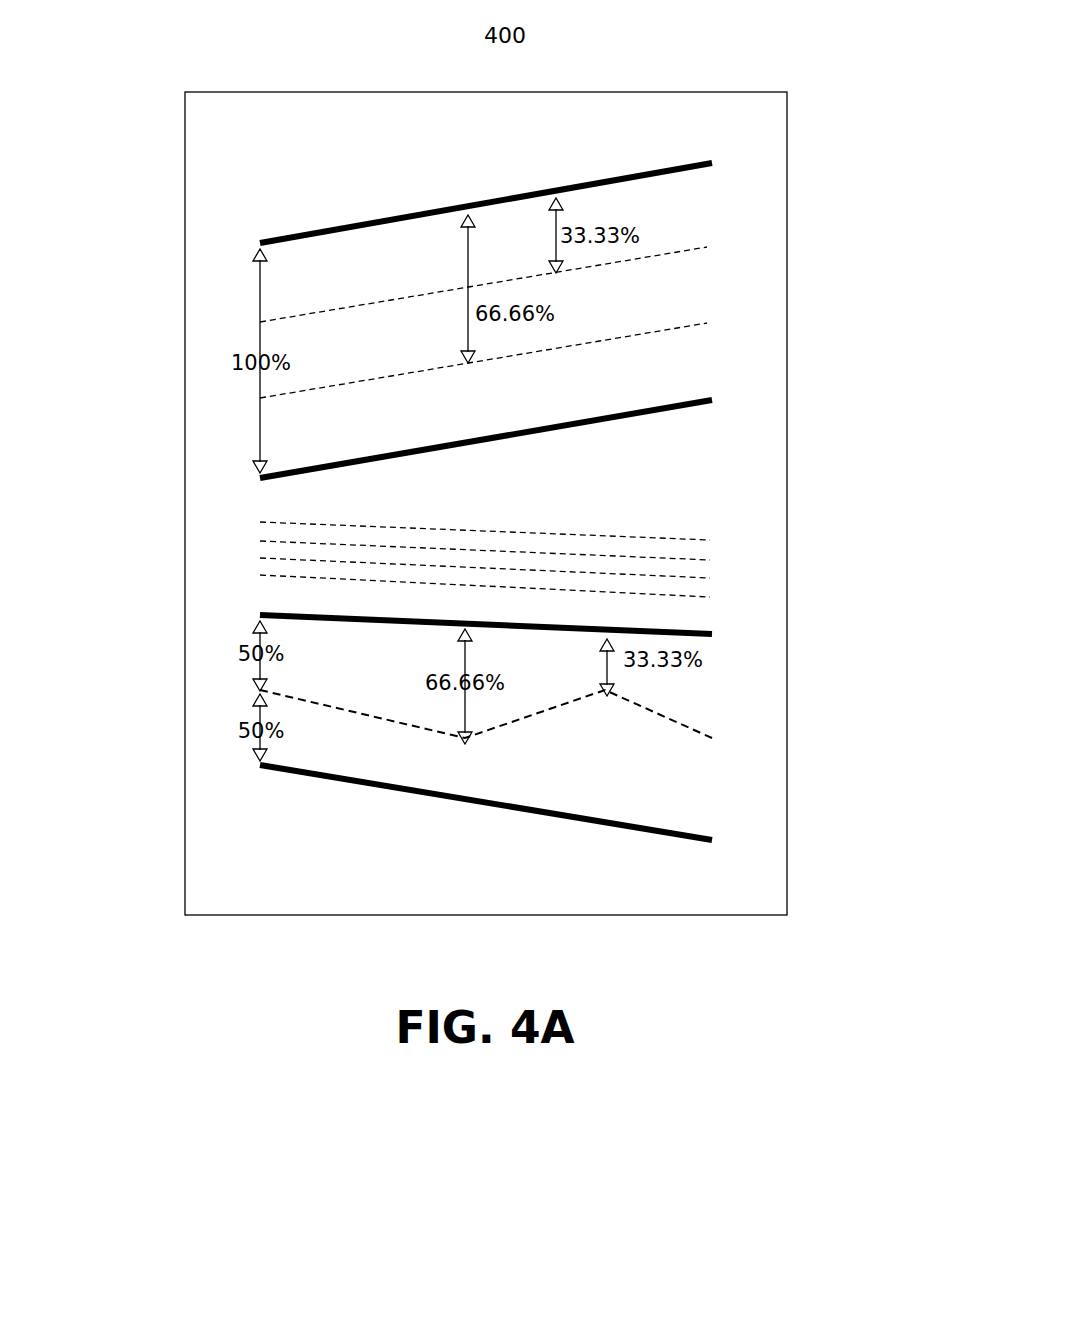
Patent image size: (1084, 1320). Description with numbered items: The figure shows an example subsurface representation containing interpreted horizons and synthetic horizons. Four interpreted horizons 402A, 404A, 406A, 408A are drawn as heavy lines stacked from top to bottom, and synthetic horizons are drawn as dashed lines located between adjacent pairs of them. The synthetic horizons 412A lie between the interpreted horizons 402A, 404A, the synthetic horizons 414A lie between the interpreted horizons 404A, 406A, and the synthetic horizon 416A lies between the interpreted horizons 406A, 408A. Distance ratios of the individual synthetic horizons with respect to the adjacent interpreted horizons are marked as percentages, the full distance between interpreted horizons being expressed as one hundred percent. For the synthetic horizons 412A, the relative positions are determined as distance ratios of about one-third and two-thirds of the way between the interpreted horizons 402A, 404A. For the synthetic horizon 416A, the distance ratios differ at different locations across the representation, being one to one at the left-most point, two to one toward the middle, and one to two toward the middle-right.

The interpreted horizon 402A is at (260, 243).
The interpreted horizon 404A is at (260, 478).
The interpreted horizon 406A is at (260, 615).
The interpreted horizon 408A is at (260, 765).
The synthetic horizons 412A is at (707, 323).
The synthetic horizons 414A is at (710, 597).
The synthetic horizon 416A is at (712, 738).